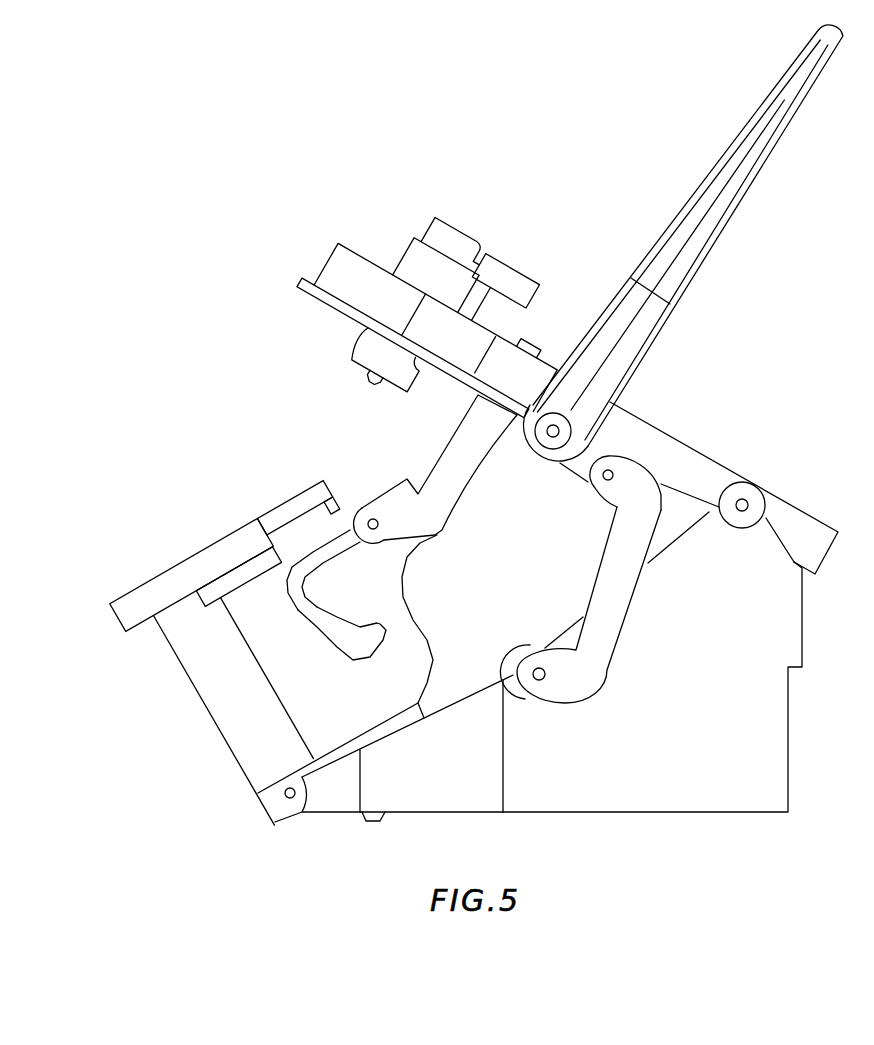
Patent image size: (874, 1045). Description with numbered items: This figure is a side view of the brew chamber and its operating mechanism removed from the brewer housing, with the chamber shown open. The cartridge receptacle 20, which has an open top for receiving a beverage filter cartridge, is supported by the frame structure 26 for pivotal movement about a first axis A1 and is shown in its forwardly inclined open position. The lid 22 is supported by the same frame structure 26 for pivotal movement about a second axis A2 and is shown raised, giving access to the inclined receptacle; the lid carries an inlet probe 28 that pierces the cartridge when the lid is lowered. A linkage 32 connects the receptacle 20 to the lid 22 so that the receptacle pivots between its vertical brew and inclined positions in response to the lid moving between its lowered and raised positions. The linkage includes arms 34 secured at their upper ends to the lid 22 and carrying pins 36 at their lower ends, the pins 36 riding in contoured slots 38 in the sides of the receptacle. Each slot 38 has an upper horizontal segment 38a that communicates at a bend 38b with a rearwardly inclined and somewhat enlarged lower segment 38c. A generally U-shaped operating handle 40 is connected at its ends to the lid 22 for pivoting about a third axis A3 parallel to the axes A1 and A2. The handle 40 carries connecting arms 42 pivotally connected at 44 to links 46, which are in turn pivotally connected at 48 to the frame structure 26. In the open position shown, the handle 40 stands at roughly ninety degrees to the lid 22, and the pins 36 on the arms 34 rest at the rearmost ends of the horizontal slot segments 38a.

The cartridge receptacle 20 is at (198, 690).
The lid 22 is at (614, 406).
The frame structure 26 is at (780, 708).
The inlet probe 28 is at (368, 350).
The linkage 32 is at (392, 436).
The arms 34 is at (472, 468).
The pins 36 is at (378, 524).
The contoured slots 38 is at (332, 619).
The upper horizontal segments 38a is at (360, 572).
The bends 38b is at (286, 596).
The lower segments 38c is at (338, 663).
The operating handle 40 is at (757, 168).
The connecting arms 42 is at (610, 444).
The pivotal connection 44 is at (613, 474).
The links 46 is at (628, 594).
The pivotal connection 48 is at (545, 678).
The first axis A1 is at (286, 795).
The second axis A2 is at (748, 502).
The third axis A3 is at (553, 440).